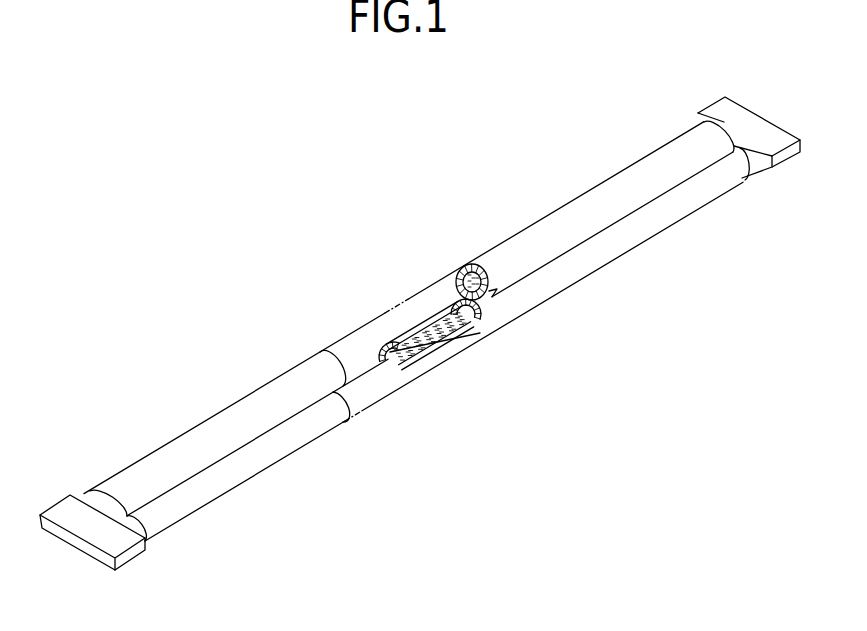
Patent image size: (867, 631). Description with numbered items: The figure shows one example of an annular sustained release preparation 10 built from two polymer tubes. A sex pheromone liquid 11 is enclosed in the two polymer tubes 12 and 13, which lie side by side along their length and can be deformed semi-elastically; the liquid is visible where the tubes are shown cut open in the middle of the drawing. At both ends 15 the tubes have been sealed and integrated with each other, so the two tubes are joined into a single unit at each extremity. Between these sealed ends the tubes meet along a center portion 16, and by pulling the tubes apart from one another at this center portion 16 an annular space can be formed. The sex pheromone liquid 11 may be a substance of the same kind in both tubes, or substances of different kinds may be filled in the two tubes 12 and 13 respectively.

The sustained release preparation 10 is at (512, 352).
The sex pheromone liquid 11 is at (487, 290).
The polymer tube 12 is at (257, 413).
The polymer tube 13 is at (673, 215).
The ends 15 is at (737, 102).
The center portion 16 is at (598, 235).